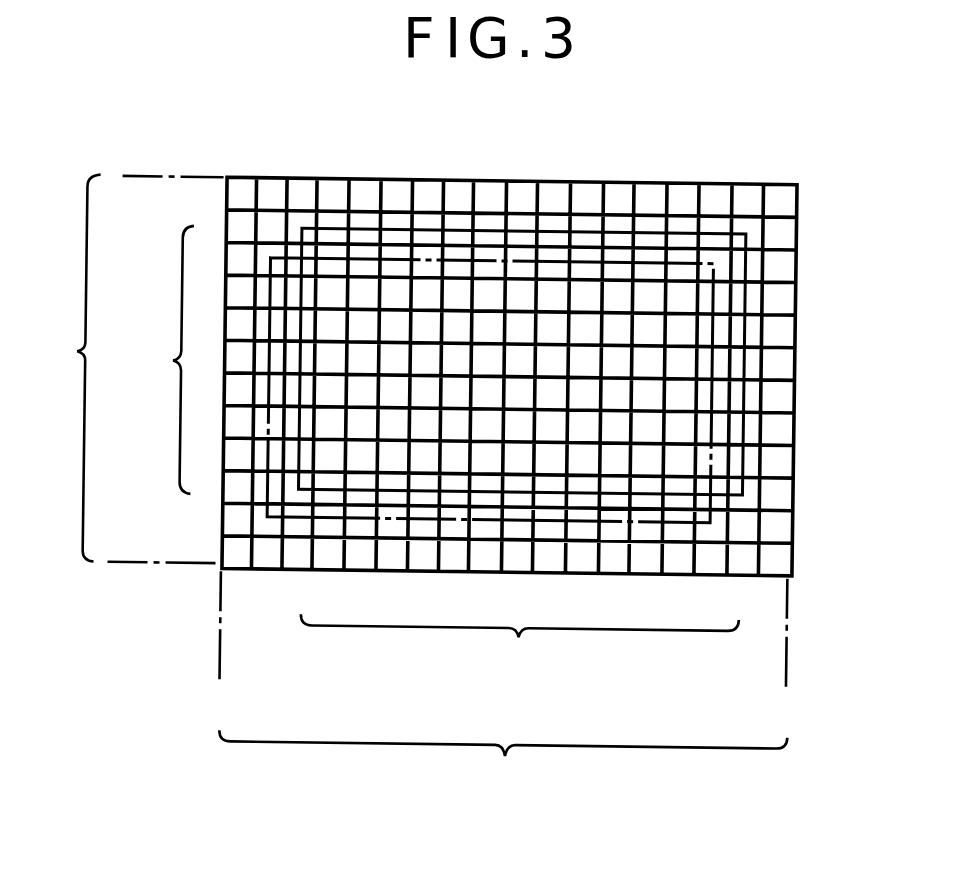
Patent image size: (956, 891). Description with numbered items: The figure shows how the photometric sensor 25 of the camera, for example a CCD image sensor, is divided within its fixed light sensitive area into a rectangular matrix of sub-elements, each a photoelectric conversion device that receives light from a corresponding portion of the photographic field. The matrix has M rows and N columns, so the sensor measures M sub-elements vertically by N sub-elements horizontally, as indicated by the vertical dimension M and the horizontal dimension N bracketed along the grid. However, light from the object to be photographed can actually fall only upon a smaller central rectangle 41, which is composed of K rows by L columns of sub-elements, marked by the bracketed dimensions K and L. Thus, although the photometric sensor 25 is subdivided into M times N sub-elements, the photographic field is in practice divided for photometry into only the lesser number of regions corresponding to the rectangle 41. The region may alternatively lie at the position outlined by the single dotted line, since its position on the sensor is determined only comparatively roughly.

The photometric sensor 25 is at (777, 183).
The central rectangle 41 is at (615, 231).
The number of rows of sub-elements M is at (129, 368).
The number of columns of sub-elements N is at (504, 691).
The number of rows in the central rectangle K is at (164, 359).
The number of columns in the central rectangle L is at (519, 654).